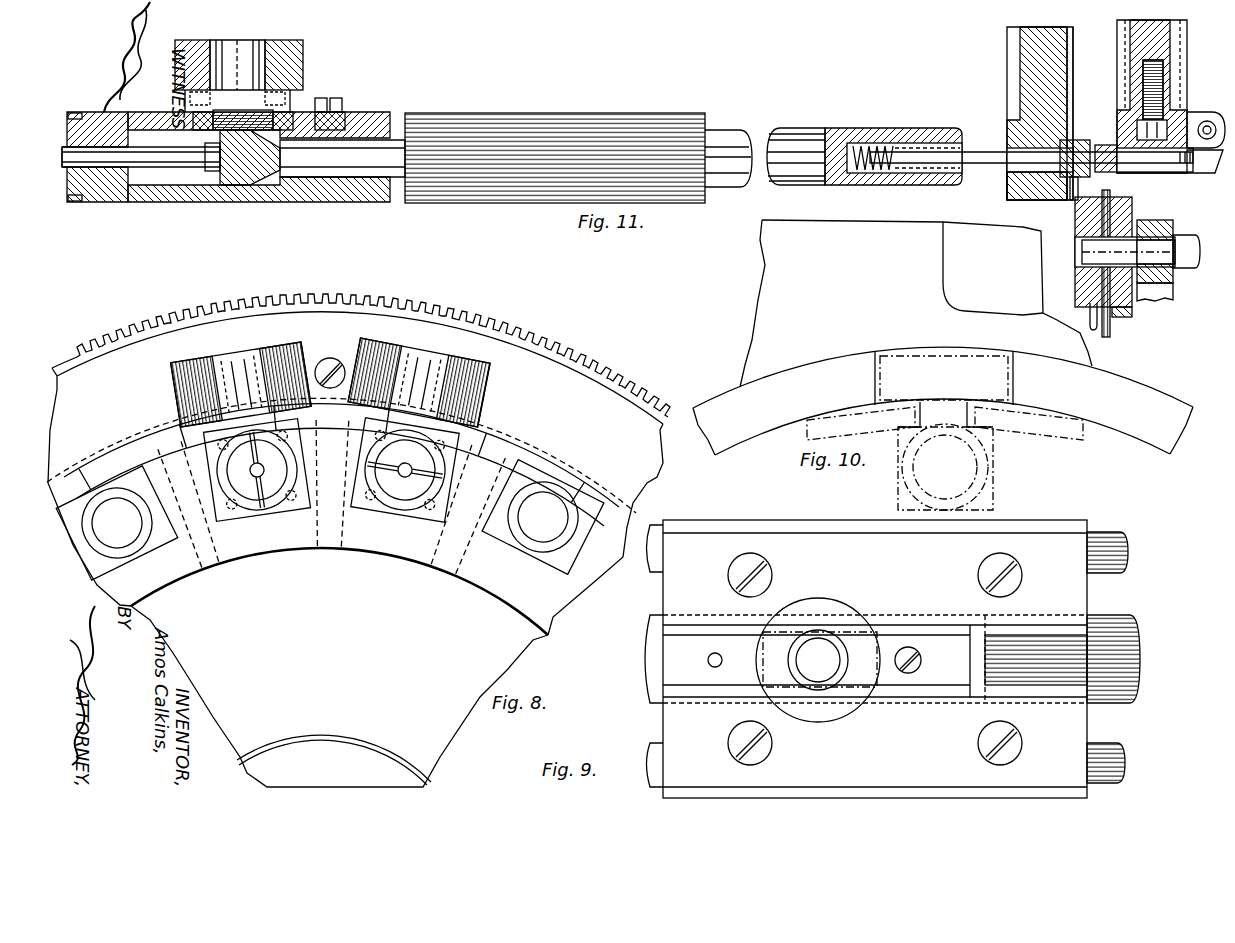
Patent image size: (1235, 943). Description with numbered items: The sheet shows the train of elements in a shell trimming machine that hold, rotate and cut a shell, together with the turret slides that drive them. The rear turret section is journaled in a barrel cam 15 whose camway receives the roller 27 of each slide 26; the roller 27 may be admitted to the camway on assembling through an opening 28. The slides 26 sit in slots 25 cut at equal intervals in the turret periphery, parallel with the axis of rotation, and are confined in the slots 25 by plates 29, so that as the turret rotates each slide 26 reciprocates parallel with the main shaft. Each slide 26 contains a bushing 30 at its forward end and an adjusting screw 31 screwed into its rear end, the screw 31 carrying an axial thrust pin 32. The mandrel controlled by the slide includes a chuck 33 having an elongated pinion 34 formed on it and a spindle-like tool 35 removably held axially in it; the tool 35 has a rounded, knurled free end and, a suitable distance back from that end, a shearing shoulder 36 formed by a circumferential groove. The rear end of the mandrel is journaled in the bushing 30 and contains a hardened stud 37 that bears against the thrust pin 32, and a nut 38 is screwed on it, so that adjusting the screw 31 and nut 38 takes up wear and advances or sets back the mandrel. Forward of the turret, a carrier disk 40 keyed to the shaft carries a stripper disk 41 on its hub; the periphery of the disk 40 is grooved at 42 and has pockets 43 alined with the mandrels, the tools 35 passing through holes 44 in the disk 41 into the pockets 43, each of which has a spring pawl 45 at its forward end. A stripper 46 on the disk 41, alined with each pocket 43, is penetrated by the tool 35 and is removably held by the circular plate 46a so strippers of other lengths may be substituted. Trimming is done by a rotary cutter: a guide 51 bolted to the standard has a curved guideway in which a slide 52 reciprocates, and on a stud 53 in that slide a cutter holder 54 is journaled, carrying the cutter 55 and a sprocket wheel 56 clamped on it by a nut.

In FIG. 10, the barrel cam 15 is at (943, 401).
In FIG. 8, the slots 25 is at (410, 519).
In FIG. 11, the slide 26 is at (368, 119).
In FIG. 9, the slide 26 is at (816, 661).
In FIG. 8, the slide 26 is at (357, 504).
In FIG. 9, the roller 27 is at (830, 606).
In FIG. 8, the roller 27 is at (484, 393).
In FIG. 10, the opening 28 is at (872, 363).
In FIG. 9, the plates 29 is at (866, 659).
In FIG. 8, the plates 29 is at (334, 432).
In FIG. 11, the bushing 30 is at (327, 190).
In FIG. 11, the adjusting screw 31 is at (105, 186).
In FIG. 11, the axial thrust pin 32 is at (165, 165).
In FIG. 11, the chuck 33 is at (814, 127).
In FIG. 11, the elongated pinion 34 is at (613, 116).
In FIG. 9, the elongated pinion 34 is at (1100, 618).
In FIG. 11, the spindle-like tool 35 is at (982, 146).
In FIG. 11, the shearing shoulder 36 is at (1106, 146).
In FIG. 11, the hardened stud 37 is at (230, 171).
In FIG. 11, the nut 38 is at (252, 185).
In FIG. 11, the carrier disk 40 is at (1183, 90).
In FIG. 11, the stripper disk 41 is at (1027, 91).
In FIG. 11, the circumferential groove 42 is at (1150, 150).
In FIG. 11, the pockets 43 is at (1207, 121).
In FIG. 11, the holes 44 is at (1018, 172).
In FIG. 11, the spring pawl 45 is at (1203, 172).
In FIG. 11, the stripper 46 is at (1081, 139).
In FIG. 11, the circular plate 46a is at (1073, 100).
In FIG. 11, the guide 51 is at (1075, 221).
In FIG. 11, the slide 52 is at (1168, 251).
In FIG. 11, the stud 53 is at (1122, 248).
In FIG. 11, the cutter holder 54 is at (1128, 314).
In FIG. 11, the cutter 55 is at (1110, 330).
In FIG. 11, the sprocket wheel 56 is at (1093, 330).